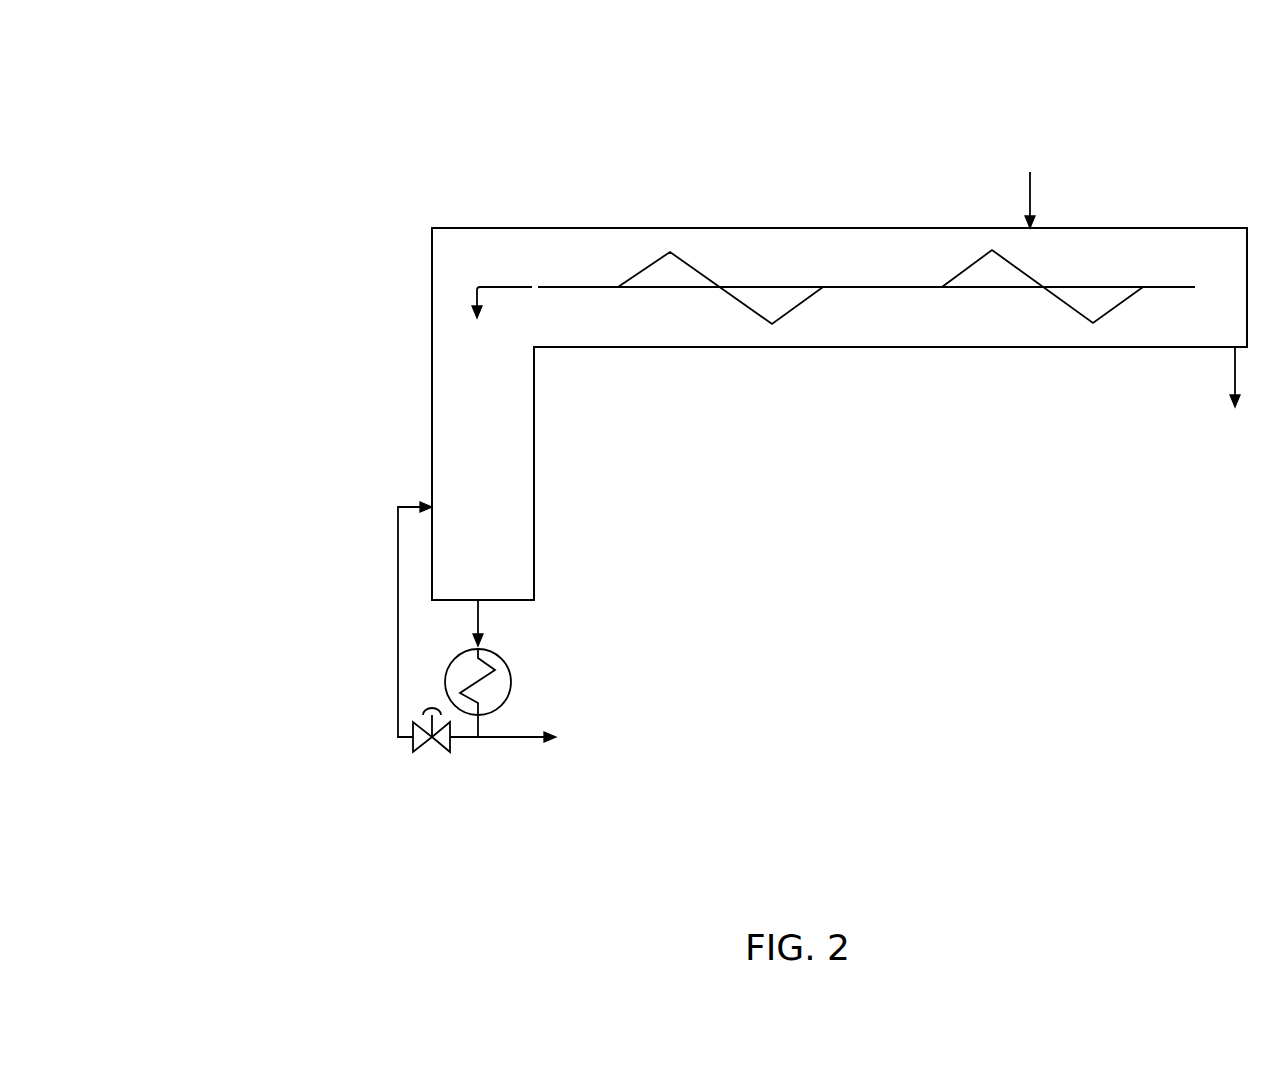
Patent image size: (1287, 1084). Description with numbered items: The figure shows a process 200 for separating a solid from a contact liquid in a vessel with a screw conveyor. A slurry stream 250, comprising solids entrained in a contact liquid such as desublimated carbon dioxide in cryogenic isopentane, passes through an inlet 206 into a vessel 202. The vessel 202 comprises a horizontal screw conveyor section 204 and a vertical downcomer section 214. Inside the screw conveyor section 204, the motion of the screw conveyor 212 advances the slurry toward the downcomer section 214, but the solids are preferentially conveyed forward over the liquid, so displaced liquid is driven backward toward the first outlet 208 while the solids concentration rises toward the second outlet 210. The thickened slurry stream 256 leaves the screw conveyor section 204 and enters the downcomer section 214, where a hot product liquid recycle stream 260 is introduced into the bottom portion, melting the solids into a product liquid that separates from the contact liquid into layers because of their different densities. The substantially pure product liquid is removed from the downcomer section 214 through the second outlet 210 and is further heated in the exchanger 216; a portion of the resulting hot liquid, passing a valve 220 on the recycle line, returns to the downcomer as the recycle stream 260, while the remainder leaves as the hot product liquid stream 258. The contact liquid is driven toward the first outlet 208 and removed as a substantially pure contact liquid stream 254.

The process 200 is at (256, 88).
The vessel 202 is at (443, 228).
The screw conveyor section 204 is at (682, 228).
The inlet 206 is at (1027, 227).
The first outlet 208 is at (1232, 347).
The second outlet 210 is at (478, 602).
The screw conveyor 212 is at (771, 326).
The downcomer section 214 is at (432, 430).
The exchanger 216 is at (512, 678).
The valve 220 is at (442, 750).
The slurry stream 250 is at (1030, 185).
The contact liquid stream 254 is at (1238, 393).
The thickened slurry stream 256 is at (493, 316).
The product liquid stream 258 is at (527, 737).
The hot product liquid recycle stream 260 is at (398, 607).